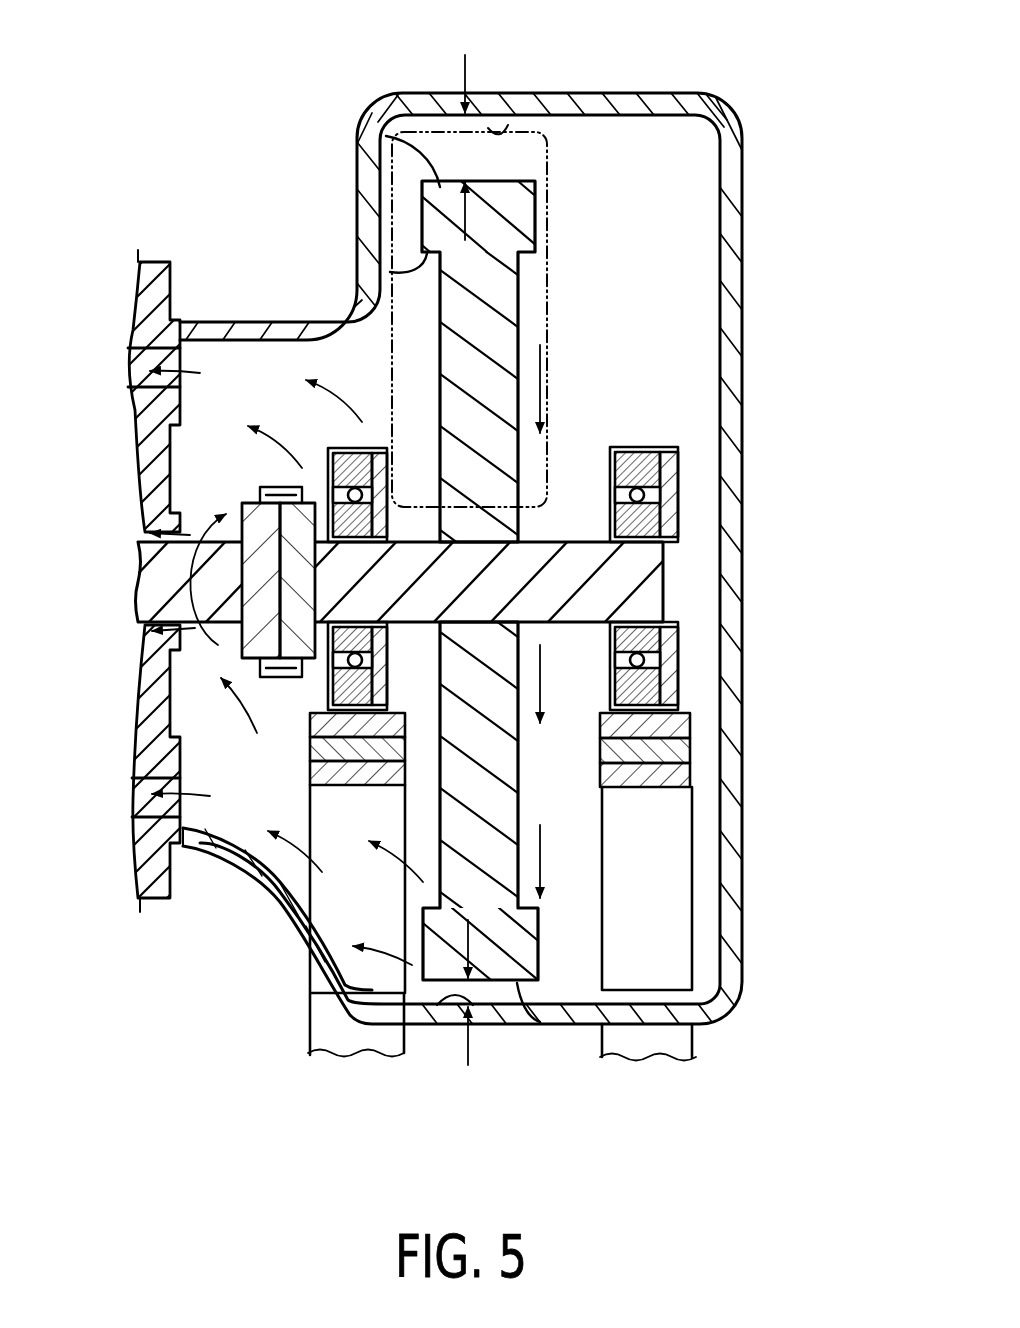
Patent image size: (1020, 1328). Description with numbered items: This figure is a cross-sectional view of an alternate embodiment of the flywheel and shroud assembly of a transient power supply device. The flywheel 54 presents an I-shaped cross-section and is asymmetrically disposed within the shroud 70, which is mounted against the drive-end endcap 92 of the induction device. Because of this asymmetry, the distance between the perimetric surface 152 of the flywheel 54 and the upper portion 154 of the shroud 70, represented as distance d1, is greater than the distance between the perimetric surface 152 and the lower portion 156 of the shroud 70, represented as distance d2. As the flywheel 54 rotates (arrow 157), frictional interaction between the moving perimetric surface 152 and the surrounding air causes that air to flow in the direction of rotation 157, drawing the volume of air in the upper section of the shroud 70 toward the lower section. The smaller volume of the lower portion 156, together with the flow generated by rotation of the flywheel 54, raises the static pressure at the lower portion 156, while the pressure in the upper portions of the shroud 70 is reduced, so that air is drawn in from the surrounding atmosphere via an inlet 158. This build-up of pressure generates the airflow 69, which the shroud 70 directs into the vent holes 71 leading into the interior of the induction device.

The flywheel 54 is at (520, 320).
The airflow 69 is at (256, 735).
The shroud 70 is at (744, 233).
The vent holes 71 is at (140, 362).
The drive-end endcap 92 is at (172, 270).
The perimetric surface 152 is at (396, 138).
The upper portion of the shroud 154 is at (508, 125).
The lower portion of the shroud 156 is at (453, 1007).
The direction of rotation of the flywheel 157 is at (188, 505).
The inlet 158 is at (549, 171).
The distance between perimetric surface and upper portion of shroud d1 is at (462, 150).
The distance between perimetric surface and lower portion of shroud d2 is at (478, 1003).